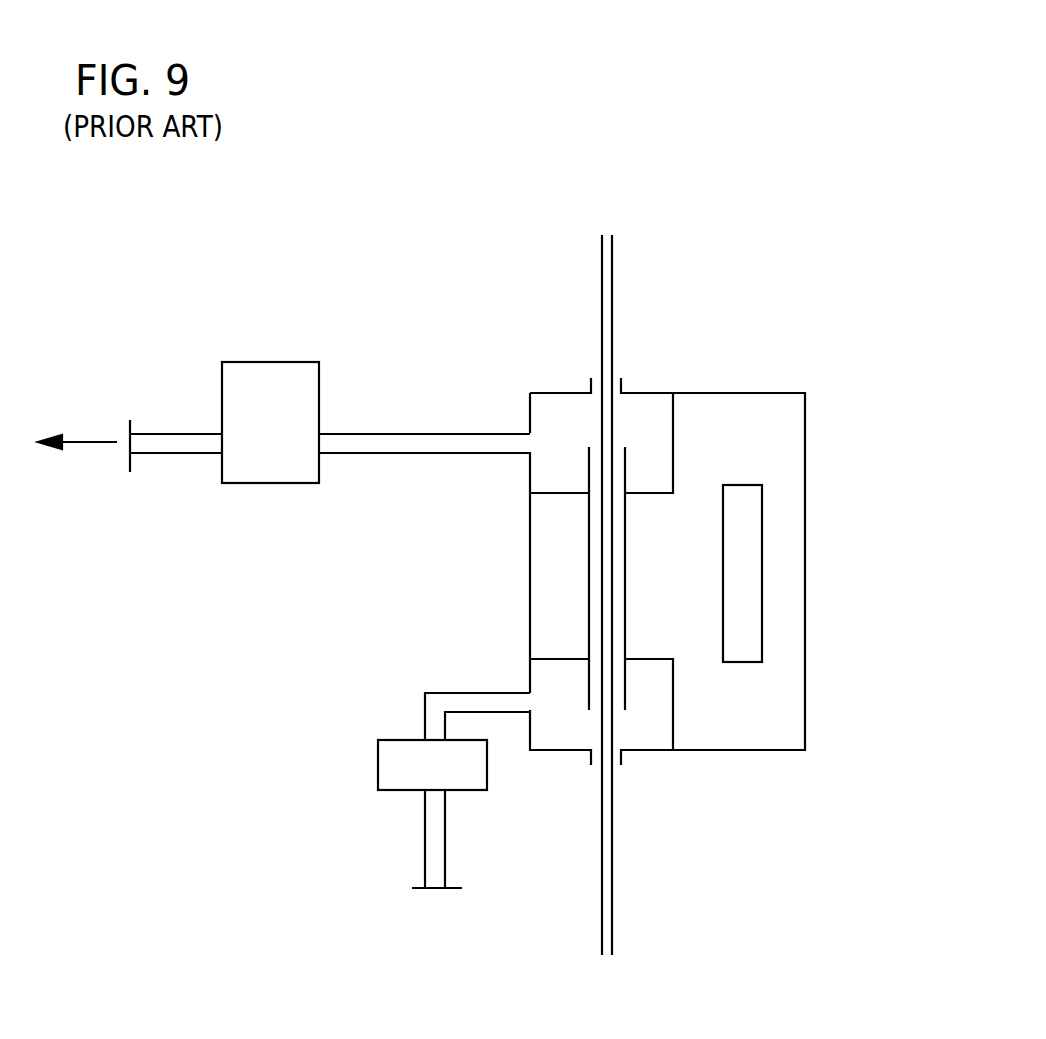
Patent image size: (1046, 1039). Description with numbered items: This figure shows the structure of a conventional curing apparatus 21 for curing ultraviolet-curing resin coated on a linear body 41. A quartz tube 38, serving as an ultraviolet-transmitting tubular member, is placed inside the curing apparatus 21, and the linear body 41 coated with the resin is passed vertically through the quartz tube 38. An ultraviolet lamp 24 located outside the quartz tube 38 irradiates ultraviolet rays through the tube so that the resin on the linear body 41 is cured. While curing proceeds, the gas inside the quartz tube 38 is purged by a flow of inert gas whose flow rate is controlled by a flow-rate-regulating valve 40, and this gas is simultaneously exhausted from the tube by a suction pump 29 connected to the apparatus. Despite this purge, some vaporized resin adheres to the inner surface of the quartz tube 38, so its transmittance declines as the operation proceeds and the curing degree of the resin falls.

The curing apparatus 21 is at (805, 470).
The ultraviolet lamp 24 is at (745, 630).
The suction pump 29 is at (292, 388).
The quartz tube 38 is at (626, 615).
The flow-rate-regulating valve 40 is at (393, 768).
The linear body 41 is at (608, 323).